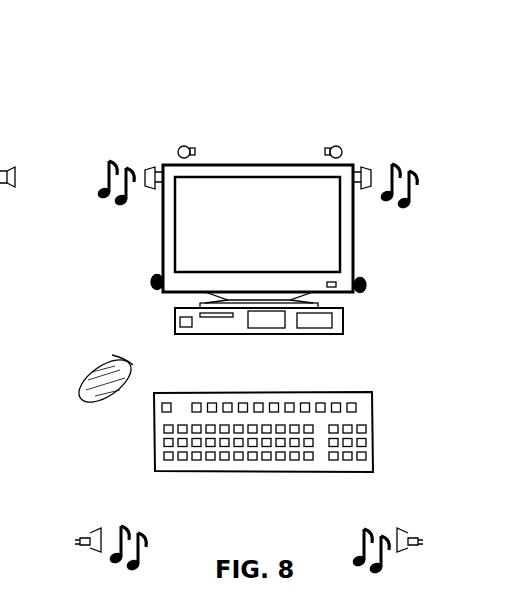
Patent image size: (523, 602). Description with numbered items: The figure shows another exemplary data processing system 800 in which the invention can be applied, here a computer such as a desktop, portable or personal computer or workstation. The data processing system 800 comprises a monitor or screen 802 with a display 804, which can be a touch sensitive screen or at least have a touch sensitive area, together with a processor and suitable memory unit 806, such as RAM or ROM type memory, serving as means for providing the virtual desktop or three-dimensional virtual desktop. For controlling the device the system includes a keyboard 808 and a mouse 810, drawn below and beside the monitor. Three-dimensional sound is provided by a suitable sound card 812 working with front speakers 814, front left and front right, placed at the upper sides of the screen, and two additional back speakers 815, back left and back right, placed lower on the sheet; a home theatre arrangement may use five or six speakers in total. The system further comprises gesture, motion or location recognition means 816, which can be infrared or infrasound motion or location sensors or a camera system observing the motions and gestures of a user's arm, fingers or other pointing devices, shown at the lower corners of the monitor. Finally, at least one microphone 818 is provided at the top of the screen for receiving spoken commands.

The data processing system 800 is at (268, 96).
The monitor or screen 802 is at (228, 163).
The display 804 is at (278, 165).
The processor and memory unit 806 is at (272, 331).
The keyboard 808 is at (374, 456).
The mouse 810 is at (90, 365).
The sound card 812 is at (338, 331).
The front speakers 814 is at (145, 170).
The back speakers 815 is at (90, 515).
The gesture, motion or location recognition means 816 is at (152, 278).
The microphone 818 is at (180, 146).